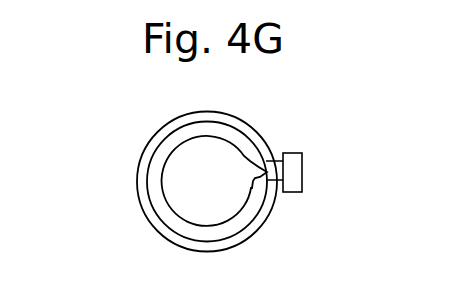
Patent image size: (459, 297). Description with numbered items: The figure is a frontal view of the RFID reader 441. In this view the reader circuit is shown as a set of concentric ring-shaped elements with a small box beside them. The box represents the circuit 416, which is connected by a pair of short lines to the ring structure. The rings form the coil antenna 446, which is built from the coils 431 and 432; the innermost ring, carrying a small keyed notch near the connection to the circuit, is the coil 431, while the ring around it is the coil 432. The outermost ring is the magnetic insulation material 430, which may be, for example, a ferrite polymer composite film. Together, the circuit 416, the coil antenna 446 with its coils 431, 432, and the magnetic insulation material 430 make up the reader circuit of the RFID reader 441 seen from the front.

The circuit 416 is at (302, 155).
The magnetic insulation material 430 is at (209, 111).
The coil 431 is at (202, 136).
The coil 432 is at (152, 153).
The RFID reader 441 is at (109, 103).
The coil antenna 446 is at (149, 238).